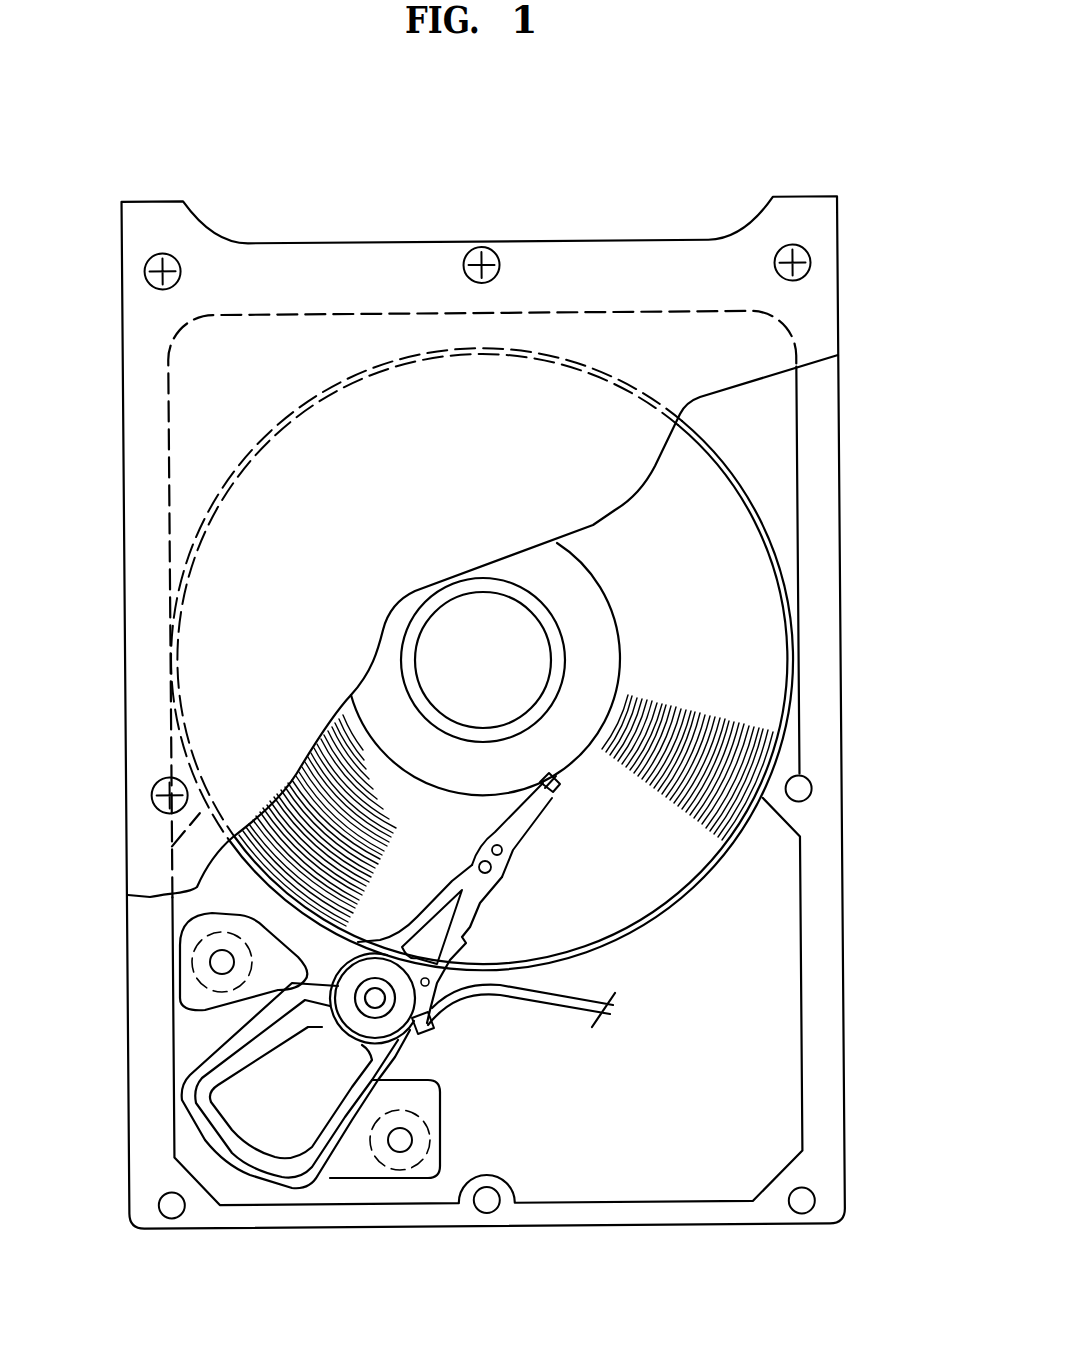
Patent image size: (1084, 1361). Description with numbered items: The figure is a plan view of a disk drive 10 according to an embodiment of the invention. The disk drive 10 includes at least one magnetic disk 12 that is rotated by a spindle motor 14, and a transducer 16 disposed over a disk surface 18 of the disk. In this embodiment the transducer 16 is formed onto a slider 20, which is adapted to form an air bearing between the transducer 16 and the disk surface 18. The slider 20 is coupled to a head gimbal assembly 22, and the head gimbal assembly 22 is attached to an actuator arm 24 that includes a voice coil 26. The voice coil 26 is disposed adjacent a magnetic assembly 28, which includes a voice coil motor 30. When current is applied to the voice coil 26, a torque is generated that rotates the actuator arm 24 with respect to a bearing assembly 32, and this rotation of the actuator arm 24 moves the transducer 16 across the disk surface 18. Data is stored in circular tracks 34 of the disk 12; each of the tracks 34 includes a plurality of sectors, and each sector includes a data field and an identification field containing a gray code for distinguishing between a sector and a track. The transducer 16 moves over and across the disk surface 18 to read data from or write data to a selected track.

The disk drive 10 is at (662, 175).
The magnetic disk 12 is at (748, 590).
The spindle motor 14 is at (458, 637).
The transducer 16 is at (549, 793).
The disk surface 18 is at (706, 679).
The slider 20 is at (523, 820).
The head gimbal assembly 22 is at (472, 931).
The actuator arm 24 is at (280, 1015).
The voice coil 26 is at (208, 1090).
The magnetic assembly 28 is at (222, 1030).
The voice coil motor 30 is at (343, 1153).
The bearing assembly 32 is at (385, 1010).
The circular tracks 34 is at (335, 787).